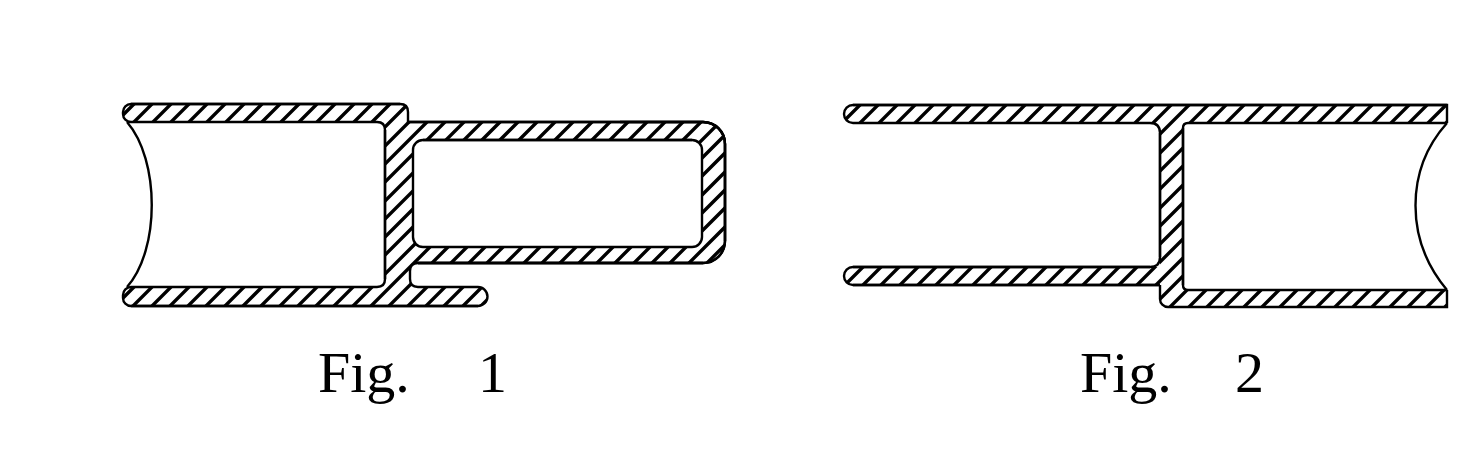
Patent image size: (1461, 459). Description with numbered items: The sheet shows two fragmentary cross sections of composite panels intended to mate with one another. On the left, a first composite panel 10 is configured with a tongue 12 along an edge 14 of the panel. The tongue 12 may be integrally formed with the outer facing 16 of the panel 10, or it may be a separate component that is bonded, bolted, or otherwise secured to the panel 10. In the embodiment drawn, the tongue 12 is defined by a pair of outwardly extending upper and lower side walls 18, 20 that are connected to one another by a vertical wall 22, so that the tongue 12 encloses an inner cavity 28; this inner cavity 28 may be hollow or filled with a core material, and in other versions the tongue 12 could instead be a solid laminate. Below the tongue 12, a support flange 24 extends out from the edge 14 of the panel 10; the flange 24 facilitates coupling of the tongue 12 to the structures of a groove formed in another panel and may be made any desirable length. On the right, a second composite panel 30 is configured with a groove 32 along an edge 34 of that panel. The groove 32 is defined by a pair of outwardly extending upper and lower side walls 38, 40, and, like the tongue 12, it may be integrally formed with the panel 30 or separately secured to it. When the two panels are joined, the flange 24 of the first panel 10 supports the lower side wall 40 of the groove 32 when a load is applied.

In FIG. 1, the first composite panel 10 is at (465, 97).
In FIG. 1, the tongue 12 is at (596, 117).
In FIG. 1, the edge 14 is at (416, 215).
In FIG. 1, the outer facing 16 is at (262, 106).
In FIG. 1, the upper side wall 18 is at (672, 126).
In FIG. 1, the lower side wall 20 is at (635, 258).
In FIG. 1, the vertical wall 22 is at (722, 197).
In FIG. 1, the support flange 24 is at (486, 296).
In FIG. 1, the inner cavity 28 is at (558, 137).
In FIG. 2, the second composite panel 30 is at (1193, 78).
In FIG. 2, the groove 32 is at (818, 265).
In FIG. 2, the edge 34 is at (1163, 200).
In FIG. 2, the upper side wall 38 is at (948, 107).
In FIG. 2, the lower side wall 40 is at (930, 276).